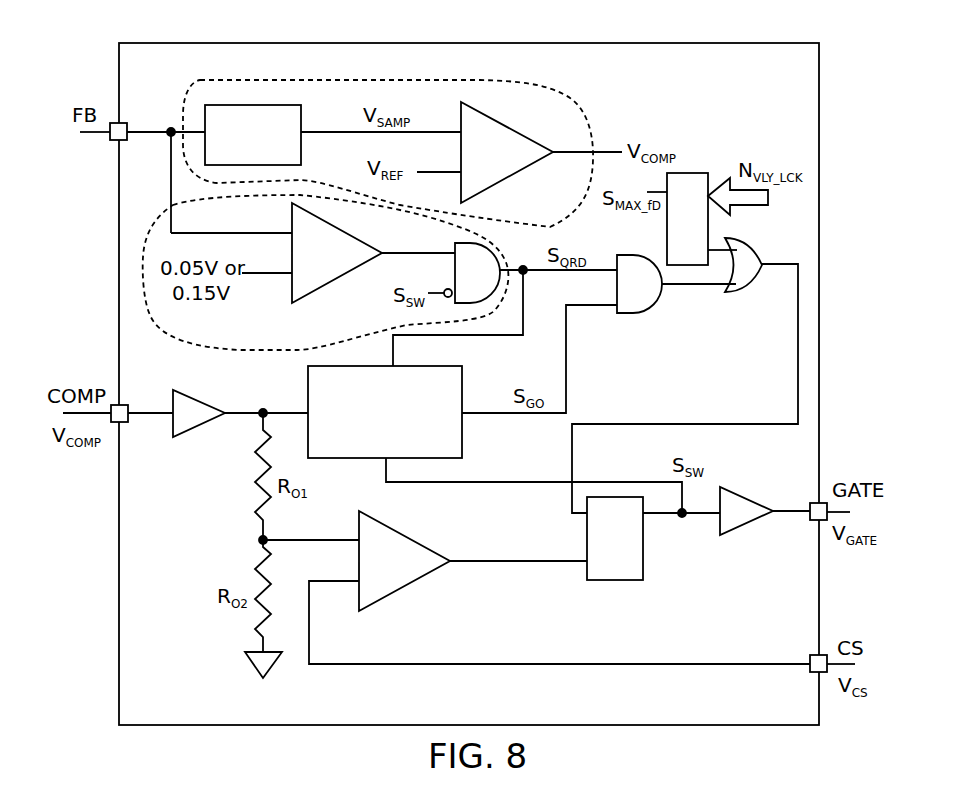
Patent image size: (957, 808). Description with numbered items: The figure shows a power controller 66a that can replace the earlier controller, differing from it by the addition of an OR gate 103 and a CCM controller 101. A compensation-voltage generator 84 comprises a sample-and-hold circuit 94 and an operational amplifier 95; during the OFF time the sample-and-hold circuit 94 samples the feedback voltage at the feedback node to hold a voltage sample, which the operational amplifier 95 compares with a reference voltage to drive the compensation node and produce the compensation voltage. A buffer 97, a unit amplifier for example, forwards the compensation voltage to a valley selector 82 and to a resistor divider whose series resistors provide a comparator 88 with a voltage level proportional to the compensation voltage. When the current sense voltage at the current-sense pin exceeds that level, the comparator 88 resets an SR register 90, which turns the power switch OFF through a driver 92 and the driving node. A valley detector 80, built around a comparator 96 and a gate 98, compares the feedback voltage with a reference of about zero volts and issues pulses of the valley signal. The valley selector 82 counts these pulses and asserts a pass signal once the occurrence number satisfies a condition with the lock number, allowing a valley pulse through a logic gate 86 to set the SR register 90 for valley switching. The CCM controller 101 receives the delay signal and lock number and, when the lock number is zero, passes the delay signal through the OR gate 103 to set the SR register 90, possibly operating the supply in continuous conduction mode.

The power controller 66a is at (201, 73).
The compensation-voltage generator 84 is at (563, 97).
The sample-and-hold (S/H) circuit 94 is at (242, 161).
The operational amplifier 95 is at (503, 180).
The valley detector 80 is at (270, 338).
The comparator 96 is at (305, 295).
The AND gate 98 is at (485, 283).
The logic gate 86 is at (625, 293).
The CCM controller 101 is at (671, 226).
The OR gate 103 is at (743, 292).
The valley selector 82 is at (373, 431).
The buffer 97 is at (187, 433).
The comparator 88 is at (378, 605).
The SR register 90 is at (603, 549).
The driver 92 is at (730, 488).